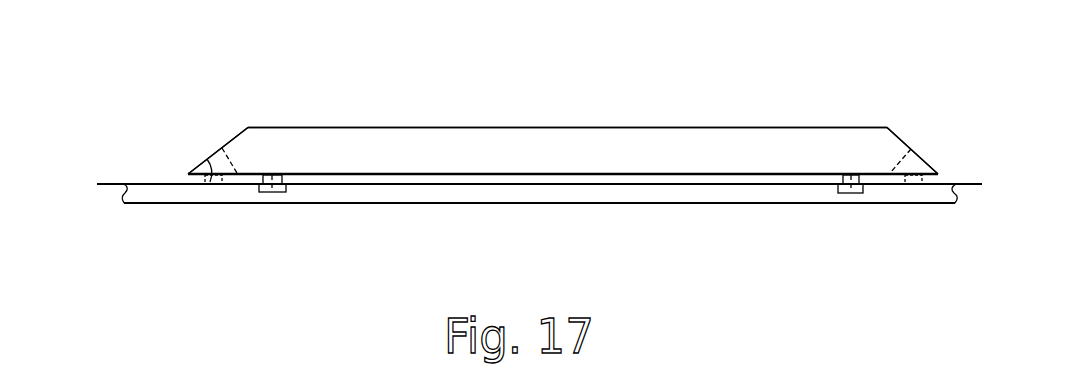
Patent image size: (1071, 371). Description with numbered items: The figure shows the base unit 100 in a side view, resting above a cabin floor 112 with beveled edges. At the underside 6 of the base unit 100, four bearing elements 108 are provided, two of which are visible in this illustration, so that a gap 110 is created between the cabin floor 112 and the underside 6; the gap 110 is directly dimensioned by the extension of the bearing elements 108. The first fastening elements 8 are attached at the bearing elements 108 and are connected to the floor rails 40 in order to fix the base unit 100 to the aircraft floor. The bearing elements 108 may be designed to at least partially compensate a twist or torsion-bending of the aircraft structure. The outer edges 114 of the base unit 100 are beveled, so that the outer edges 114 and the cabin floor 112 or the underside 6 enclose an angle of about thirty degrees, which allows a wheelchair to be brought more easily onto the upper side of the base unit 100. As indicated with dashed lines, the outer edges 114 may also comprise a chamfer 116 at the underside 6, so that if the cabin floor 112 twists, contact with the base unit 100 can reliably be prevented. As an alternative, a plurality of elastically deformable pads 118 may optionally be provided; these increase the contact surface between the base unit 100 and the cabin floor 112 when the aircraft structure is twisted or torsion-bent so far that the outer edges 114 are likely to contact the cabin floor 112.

The underside 6 is at (432, 176).
The first fastening elements 8 is at (272, 192).
The floor rails 40 is at (528, 195).
The base unit 100 is at (535, 127).
The bearing elements 108 is at (274, 175).
The gap 110 is at (642, 178).
The cabin floor 112 is at (113, 184).
The outer edges 114 is at (182, 131).
The chamfer 116 is at (222, 148).
The elastically deformable pads 118 is at (215, 184).